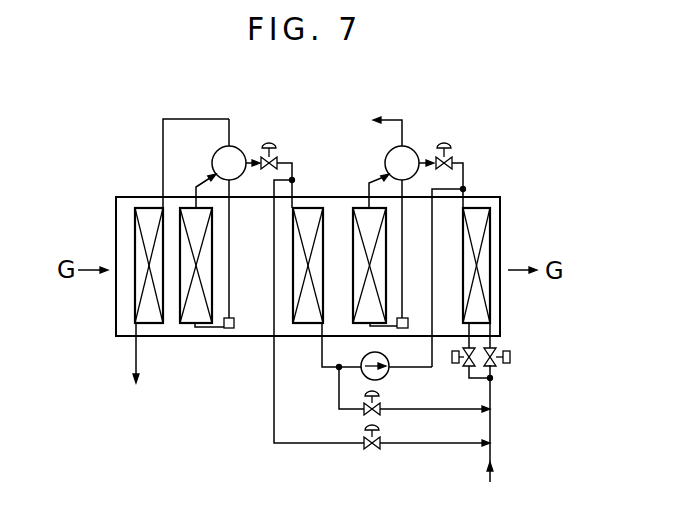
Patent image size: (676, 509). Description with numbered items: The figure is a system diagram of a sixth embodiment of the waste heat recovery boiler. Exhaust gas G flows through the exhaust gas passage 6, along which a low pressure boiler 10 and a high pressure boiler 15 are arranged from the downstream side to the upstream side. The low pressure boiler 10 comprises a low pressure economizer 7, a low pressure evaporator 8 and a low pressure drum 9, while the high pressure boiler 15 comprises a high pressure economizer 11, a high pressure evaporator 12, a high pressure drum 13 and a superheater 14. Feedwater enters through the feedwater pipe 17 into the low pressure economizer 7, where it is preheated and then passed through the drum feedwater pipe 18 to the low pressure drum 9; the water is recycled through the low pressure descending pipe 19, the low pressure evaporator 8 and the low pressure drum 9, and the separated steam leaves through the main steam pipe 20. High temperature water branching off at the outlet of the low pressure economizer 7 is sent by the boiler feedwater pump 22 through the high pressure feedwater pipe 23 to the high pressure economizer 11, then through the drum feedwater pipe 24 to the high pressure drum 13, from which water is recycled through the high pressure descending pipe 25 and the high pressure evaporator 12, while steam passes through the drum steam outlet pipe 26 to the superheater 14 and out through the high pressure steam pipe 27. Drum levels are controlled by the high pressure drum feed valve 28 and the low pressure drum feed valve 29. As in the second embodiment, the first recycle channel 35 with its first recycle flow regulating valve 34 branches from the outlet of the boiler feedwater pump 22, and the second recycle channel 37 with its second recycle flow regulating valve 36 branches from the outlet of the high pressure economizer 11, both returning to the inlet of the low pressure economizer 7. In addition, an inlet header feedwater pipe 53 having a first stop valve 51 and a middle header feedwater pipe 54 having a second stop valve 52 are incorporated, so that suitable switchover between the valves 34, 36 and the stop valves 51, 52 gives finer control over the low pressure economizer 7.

The exhaust gas passage 6 is at (137, 197).
The low pressure economizer 7 is at (491, 298).
The low pressure evaporator 8 is at (352, 236).
The low pressure drum 9 is at (415, 147).
The low pressure boiler 10 is at (452, 128).
The high pressure economizer 11 is at (323, 288).
The high pressure evaporator 12 is at (189, 323).
The high pressure drum 13 is at (243, 147).
The superheater 14 is at (151, 323).
The high pressure boiler 15 is at (229, 112).
The feedwater pipe 17 is at (492, 447).
The drum feedwater pipe 18 is at (466, 173).
The low pressure descending pipe 19 is at (403, 253).
The main steam pipe 20 is at (402, 119).
The boiler feedwater pump 22 is at (388, 359).
The high pressure feedwater pipe 23 is at (321, 356).
The drum feedwater pipe 24 is at (295, 178).
The high pressure descending pipe 25 is at (231, 299).
The drum steam outlet pipe 26 is at (178, 119).
The high pressure steam pipe 27 is at (133, 353).
The high pressure drum feed valve 28 is at (276, 147).
The low pressure drum feed valve 29 is at (452, 148).
The first recycle flow regulating valve 34 is at (383, 404).
The first recycle channel 35 is at (338, 402).
The second recycle flow regulating valve 36 is at (377, 448).
The second recycle channel 37 is at (274, 444).
The first stop valve 51 is at (511, 357).
The second stop valve 52 is at (454, 364).
The inlet header feedwater pipe 53 is at (492, 378).
The middle header feedwater pipe 54 is at (478, 378).